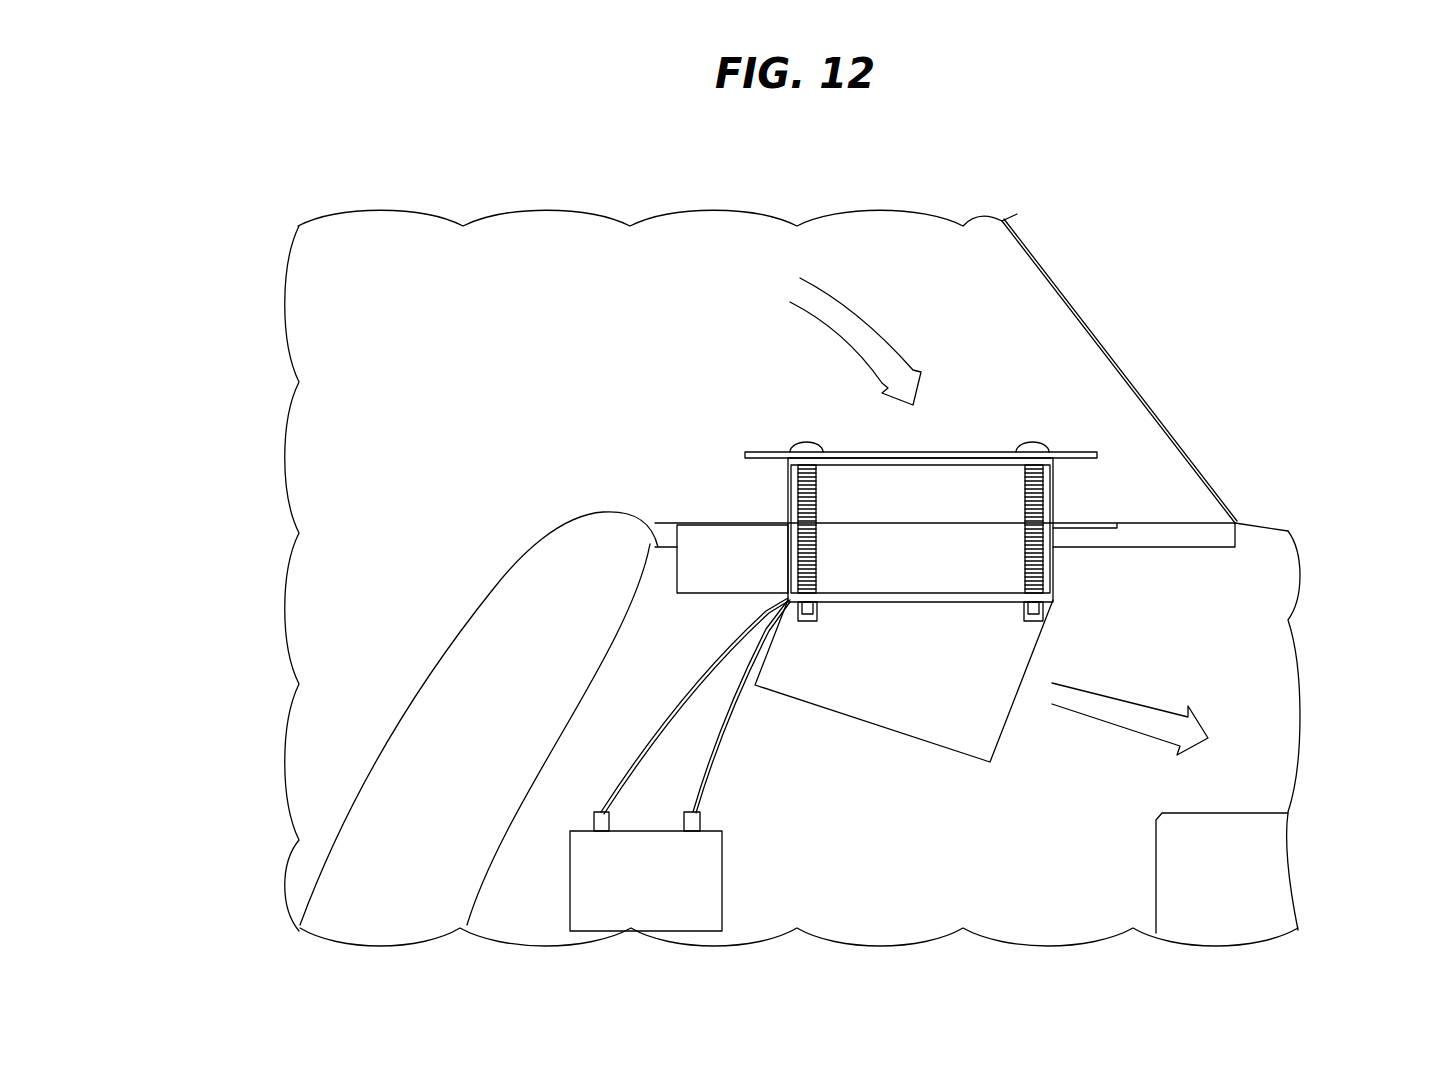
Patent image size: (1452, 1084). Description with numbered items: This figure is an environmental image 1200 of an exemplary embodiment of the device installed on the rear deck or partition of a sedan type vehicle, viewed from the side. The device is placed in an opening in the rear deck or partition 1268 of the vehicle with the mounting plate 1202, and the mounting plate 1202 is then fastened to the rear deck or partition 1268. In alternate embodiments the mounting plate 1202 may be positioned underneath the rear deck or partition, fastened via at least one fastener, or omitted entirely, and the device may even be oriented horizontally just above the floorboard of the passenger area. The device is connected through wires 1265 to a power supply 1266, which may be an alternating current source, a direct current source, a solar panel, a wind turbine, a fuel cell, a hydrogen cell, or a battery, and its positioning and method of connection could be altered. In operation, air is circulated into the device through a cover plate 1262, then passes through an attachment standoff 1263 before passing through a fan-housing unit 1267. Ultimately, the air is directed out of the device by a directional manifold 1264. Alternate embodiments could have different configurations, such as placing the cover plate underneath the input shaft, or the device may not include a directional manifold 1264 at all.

The environmental image 1200 is at (340, 165).
The mounting plate 1202 is at (1083, 515).
The cover plate 1262 is at (878, 428).
The attachment standoff 1263 is at (930, 498).
The directional manifold 1264 is at (912, 687).
The wires 1265 is at (638, 721).
The power supply 1266 is at (601, 908).
The fan-housing unit 1267 is at (915, 550).
The rear deck or partition 1268 is at (707, 548).